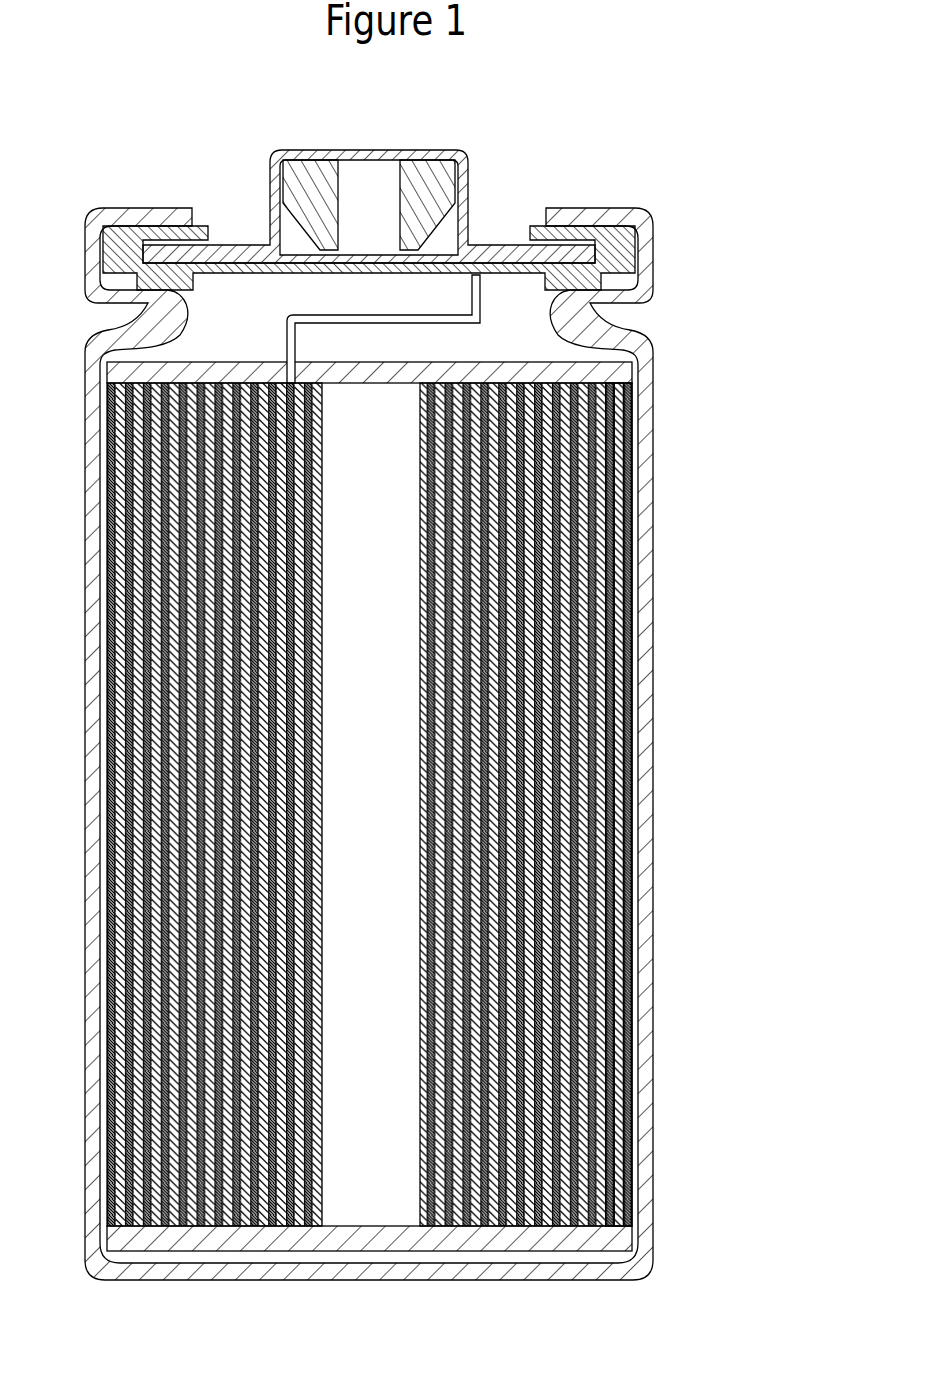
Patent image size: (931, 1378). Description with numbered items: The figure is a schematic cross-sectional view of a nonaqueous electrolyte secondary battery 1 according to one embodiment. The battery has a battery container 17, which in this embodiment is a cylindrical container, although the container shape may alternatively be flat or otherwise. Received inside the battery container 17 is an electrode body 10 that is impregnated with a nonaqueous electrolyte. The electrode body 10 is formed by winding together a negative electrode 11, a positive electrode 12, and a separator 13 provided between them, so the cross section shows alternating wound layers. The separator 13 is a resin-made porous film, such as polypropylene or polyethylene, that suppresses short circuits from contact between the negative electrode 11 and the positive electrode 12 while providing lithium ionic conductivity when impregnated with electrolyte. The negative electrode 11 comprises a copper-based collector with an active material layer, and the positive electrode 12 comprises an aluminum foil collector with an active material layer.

The nonaqueous electrolyte secondary battery 1 is at (447, 668).
The electrode body 10 is at (440, 804).
The negative electrode 11 is at (628, 726).
The positive electrode 12 is at (633, 641).
The separator 13 is at (620, 672).
The battery container 17 is at (655, 465).